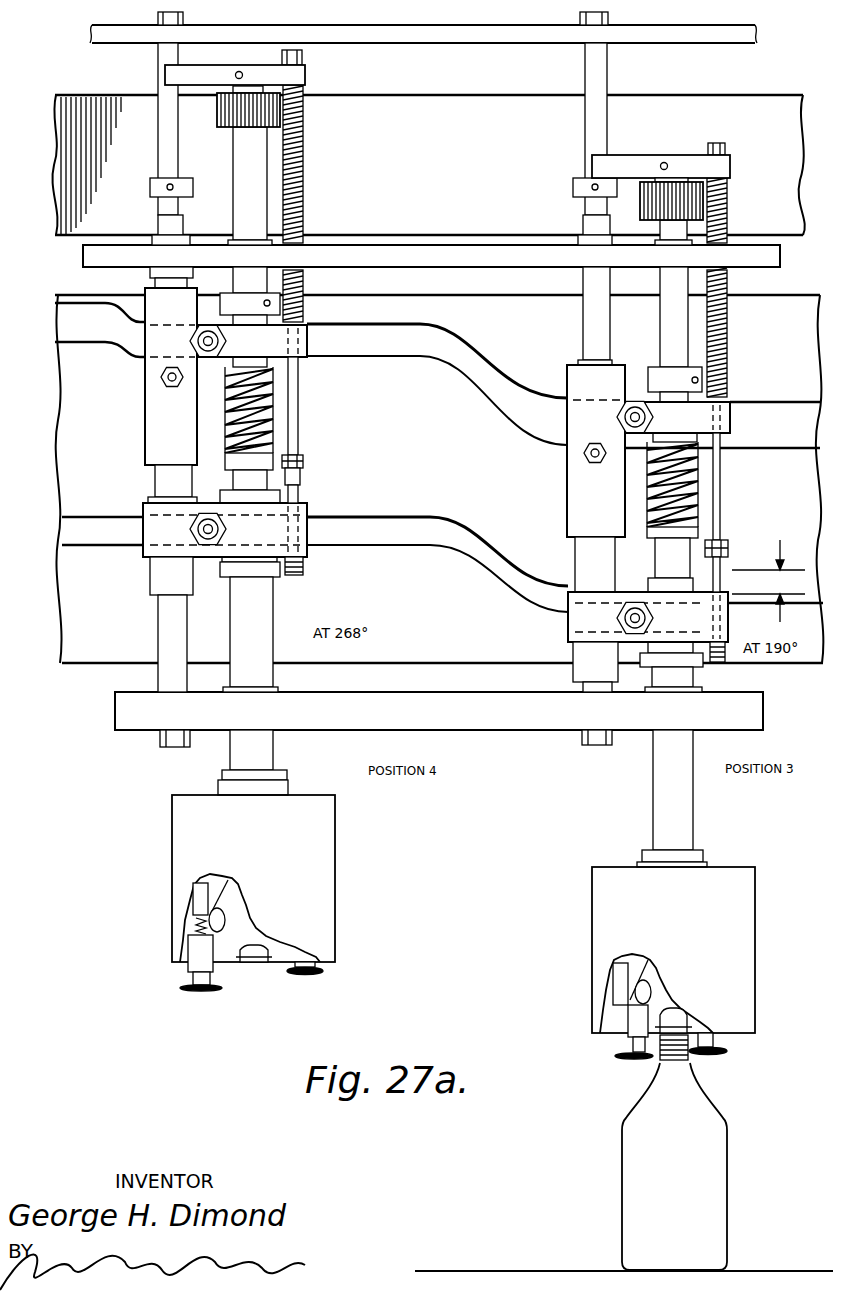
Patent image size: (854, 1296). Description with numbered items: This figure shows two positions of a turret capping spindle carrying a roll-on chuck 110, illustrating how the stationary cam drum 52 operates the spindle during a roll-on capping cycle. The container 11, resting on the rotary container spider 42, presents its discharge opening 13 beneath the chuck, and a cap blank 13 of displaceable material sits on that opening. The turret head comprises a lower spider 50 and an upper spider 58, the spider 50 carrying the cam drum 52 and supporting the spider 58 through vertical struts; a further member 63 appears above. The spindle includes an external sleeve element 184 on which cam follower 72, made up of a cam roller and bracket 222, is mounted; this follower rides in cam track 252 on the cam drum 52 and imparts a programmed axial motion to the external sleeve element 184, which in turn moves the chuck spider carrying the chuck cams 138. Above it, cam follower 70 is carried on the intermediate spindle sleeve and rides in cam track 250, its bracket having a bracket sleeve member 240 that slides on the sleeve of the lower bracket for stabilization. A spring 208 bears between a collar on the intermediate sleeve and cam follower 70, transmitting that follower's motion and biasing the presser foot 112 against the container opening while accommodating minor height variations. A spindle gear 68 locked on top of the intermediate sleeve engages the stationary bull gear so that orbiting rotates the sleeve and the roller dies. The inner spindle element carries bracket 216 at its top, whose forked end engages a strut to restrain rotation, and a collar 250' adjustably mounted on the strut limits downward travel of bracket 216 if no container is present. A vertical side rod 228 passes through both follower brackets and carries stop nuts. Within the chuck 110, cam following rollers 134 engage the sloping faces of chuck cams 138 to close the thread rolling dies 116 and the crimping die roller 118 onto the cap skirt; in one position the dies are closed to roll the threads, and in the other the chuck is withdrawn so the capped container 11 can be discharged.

The bottle 11 is at (635, 1185).
The discharge opening 13 is at (692, 1063).
The rotary container spider 42 is at (520, 1269).
The spider 50 is at (750, 708).
The cam drum 52 is at (72, 362).
The spider 58 is at (397, 253).
The upper frame 63 is at (527, 80).
The spindle gear 68 is at (213, 117).
The cam follower 70 is at (313, 338).
The cam follower 72 is at (313, 530).
The roll-on chuck 110 is at (168, 827).
The presser foot 112 is at (255, 963).
The rolling die 116 is at (315, 978).
The crimping die roller 118 is at (198, 995).
The cam following roller 134 is at (222, 920).
The chuck cam 138 is at (205, 895).
The external sleeve element 184 is at (262, 745).
The spring 208 is at (273, 398).
The bracket 216 is at (300, 76).
The bracket 222 is at (568, 625).
The vertical side rod 228 is at (293, 437).
The bracket sleeve member 240 is at (158, 397).
The cam track 250 is at (311, 374).
The collar 250' is at (352, 205).
The cam track 252 is at (423, 530).